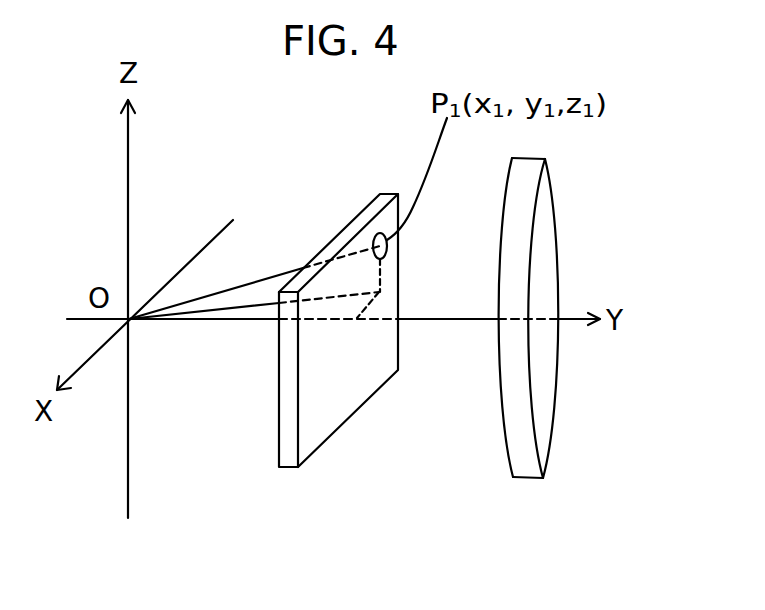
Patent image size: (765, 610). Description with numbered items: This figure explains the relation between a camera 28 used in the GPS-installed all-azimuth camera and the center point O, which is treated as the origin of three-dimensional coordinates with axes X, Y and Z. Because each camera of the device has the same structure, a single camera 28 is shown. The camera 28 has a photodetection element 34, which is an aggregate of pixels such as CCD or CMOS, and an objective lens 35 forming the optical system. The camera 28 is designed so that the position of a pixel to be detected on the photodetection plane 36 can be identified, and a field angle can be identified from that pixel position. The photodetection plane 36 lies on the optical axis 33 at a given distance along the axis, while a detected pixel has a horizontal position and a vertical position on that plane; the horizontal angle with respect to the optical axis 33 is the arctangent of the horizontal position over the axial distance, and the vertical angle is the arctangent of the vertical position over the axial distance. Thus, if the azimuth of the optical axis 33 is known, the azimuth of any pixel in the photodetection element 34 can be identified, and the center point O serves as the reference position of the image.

The camera 28 is at (331, 382).
The optical axis 33 is at (453, 317).
The photodetection element 34 is at (288, 468).
The objective lens 35 is at (555, 442).
The photodetection plane 36 is at (373, 330).